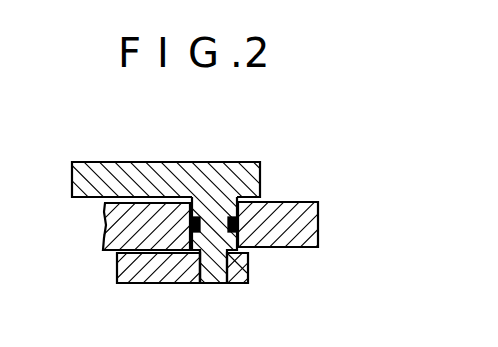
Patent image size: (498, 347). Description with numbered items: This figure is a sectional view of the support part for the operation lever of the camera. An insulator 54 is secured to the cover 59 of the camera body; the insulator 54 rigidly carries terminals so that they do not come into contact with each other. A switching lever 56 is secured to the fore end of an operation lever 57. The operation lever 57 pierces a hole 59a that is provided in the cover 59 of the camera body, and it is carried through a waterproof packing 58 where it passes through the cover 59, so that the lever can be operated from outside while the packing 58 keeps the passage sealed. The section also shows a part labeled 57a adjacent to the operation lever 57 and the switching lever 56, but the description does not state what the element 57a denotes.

The insulator 54 is at (151, 208).
The operation lever 57 is at (227, 168).
The cover 59 is at (290, 212).
The hole 59a is at (190, 208).
The bottom plate 57a is at (160, 257).
The switching lever 56 is at (190, 272).
The waterproof packing 58 is at (228, 232).